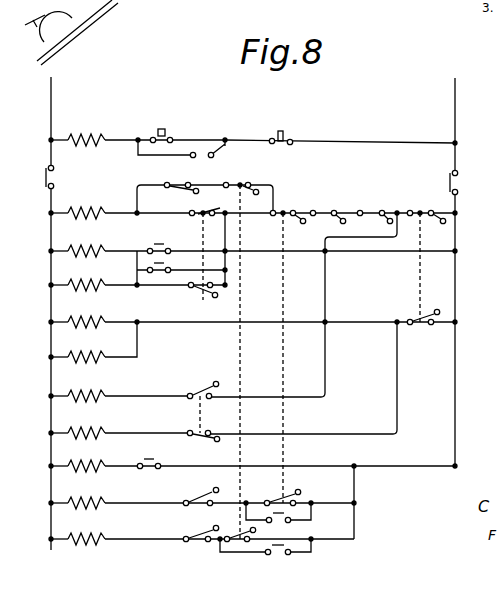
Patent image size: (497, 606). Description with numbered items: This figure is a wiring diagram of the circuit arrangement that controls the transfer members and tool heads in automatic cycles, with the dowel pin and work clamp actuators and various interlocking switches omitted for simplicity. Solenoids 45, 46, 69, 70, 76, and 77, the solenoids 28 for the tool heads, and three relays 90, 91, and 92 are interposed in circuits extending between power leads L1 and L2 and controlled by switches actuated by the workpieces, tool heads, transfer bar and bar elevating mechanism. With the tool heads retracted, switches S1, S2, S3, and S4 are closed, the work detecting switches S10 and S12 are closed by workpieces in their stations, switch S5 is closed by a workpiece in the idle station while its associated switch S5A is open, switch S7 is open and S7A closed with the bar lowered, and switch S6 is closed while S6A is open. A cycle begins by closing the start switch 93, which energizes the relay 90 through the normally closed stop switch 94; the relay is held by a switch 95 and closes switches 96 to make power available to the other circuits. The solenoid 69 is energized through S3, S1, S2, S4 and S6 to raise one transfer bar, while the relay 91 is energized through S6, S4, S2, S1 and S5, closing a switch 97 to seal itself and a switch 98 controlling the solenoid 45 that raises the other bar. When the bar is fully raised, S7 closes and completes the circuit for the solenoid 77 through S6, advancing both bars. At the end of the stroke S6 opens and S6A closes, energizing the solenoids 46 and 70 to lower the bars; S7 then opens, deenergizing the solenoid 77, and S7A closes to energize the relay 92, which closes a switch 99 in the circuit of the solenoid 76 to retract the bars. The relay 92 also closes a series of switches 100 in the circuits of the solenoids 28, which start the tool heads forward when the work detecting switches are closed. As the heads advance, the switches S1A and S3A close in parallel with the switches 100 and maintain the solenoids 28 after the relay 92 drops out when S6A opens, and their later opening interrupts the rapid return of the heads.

The power lead L1 is at (62, 101).
The power lead L2 is at (445, 127).
The relay 90 is at (82, 139).
The start switch 93 is at (181, 142).
The switch 95 is at (220, 151).
The stop switch 94 is at (292, 142).
The switches 96 is at (63, 176).
The solenoid 69 is at (91, 211).
The solenoid 45 is at (90, 248).
The switch 98 is at (152, 247).
The switch 97 is at (148, 269).
The relay 91 is at (97, 290).
The solenoid 70 is at (97, 325).
The solenoid 46 is at (97, 360).
The solenoid 77 is at (100, 394).
The relay 92 is at (95, 431).
The solenoid 76 is at (90, 465).
The switch 99 is at (160, 460).
The solenoids 28 is at (90, 502).
The switches 100 is at (304, 530).
The switch S1 is at (287, 211).
The switch S1A is at (294, 499).
The switch S2 is at (328, 211).
The switch S3 is at (180, 184).
The switch S3A is at (225, 532).
The switch S4 is at (370, 211).
The switch S5 is at (204, 297).
The switch S5A is at (197, 211).
The switch S6 is at (415, 211).
The switch S6A is at (420, 326).
The switch S7 is at (200, 393).
The switch S7A is at (205, 442).
The switch S10 is at (200, 497).
The switch S12 is at (196, 530).